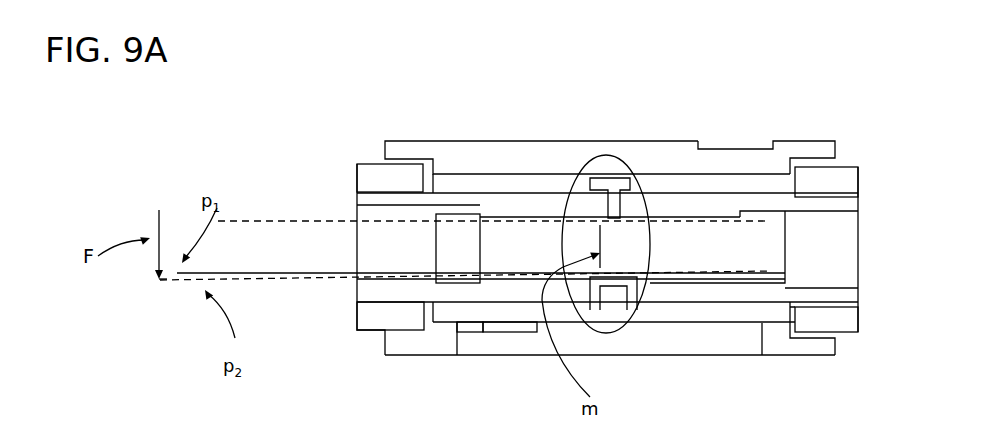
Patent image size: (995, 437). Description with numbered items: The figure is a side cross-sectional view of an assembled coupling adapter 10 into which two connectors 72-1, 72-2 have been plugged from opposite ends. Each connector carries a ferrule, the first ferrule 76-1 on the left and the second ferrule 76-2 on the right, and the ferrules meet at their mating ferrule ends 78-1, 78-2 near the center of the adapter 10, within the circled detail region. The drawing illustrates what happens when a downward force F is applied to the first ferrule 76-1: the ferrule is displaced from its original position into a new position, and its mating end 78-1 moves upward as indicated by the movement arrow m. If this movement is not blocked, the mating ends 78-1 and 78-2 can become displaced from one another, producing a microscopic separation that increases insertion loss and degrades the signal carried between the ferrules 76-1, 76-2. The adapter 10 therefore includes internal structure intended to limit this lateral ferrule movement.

The coupling adapter 10 is at (322, 116).
The first connector 72-1 is at (482, 202).
The second connector 72-2 is at (758, 202).
The first ferrule 76-1 is at (515, 240).
The second ferrule 76-2 is at (698, 238).
The first mating ferrule end 78-1 is at (603, 212).
The second mating ferrule end 78-2 is at (652, 243).